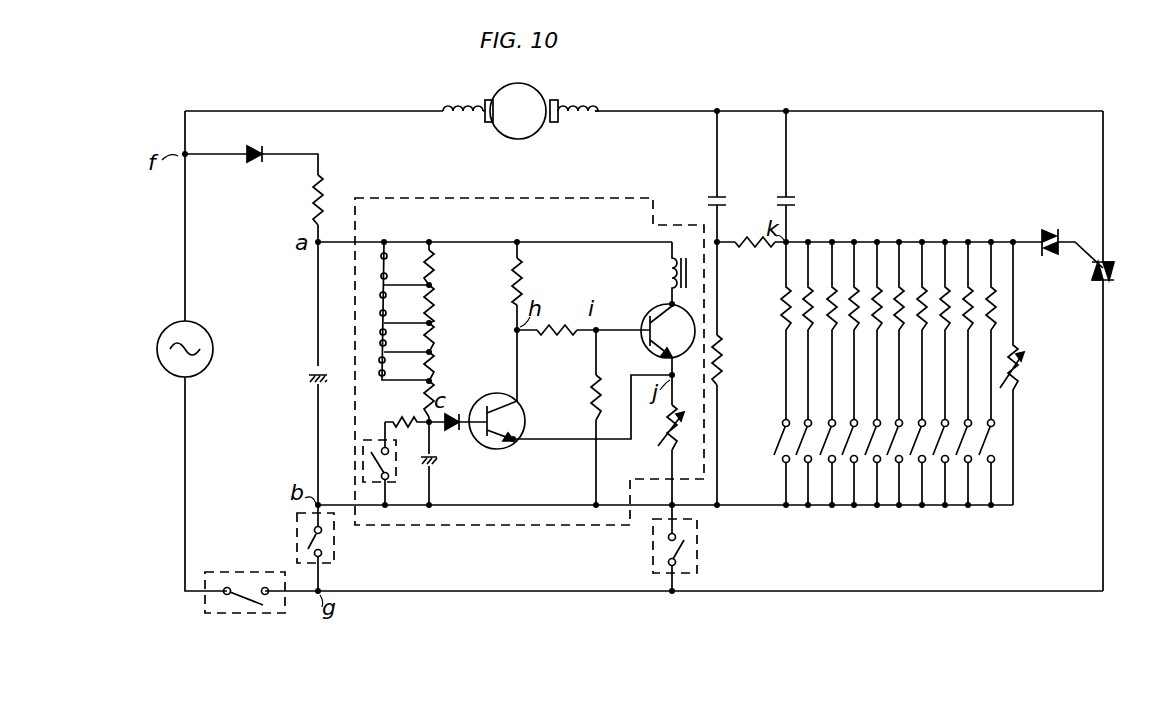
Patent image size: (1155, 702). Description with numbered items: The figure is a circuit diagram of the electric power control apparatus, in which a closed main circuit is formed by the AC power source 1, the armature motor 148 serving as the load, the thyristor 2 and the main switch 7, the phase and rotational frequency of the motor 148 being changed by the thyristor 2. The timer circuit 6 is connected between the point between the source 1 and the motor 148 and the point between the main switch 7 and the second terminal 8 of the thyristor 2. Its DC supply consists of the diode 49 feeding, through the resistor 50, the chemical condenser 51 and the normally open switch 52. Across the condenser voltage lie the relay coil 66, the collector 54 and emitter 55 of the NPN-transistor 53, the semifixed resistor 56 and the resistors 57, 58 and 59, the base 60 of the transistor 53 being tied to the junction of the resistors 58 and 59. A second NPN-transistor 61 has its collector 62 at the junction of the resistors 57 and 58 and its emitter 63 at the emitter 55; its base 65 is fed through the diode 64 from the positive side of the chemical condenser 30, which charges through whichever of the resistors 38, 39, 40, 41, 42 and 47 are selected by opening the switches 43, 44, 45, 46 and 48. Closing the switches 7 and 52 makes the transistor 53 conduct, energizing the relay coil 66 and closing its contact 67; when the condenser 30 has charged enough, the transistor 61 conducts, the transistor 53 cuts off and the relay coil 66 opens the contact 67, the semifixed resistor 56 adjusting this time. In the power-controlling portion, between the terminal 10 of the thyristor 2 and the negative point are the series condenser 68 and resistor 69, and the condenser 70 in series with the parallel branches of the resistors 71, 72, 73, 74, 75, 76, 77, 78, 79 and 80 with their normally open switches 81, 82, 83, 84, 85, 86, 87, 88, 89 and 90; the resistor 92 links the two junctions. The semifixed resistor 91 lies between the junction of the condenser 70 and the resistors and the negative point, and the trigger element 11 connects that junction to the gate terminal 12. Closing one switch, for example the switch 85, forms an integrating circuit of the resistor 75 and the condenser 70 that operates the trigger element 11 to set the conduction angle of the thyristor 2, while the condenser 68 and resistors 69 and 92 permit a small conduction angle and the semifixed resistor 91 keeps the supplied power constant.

The AC power source 1 is at (196, 325).
The thyristor 2 is at (1115, 270).
The timer circuit 6 is at (478, 527).
The main switch 7 is at (235, 614).
The second terminal 8 is at (1103, 320).
The terminal 10 is at (1103, 224).
The trigger element 11 is at (1040, 262).
The gate terminal 12 is at (1070, 238).
The chemical condenser 30 is at (433, 466).
The resistor 38 is at (424, 410).
The resistor 39 is at (435, 366).
The resistor 40 is at (435, 338).
The resistor 41 is at (435, 298).
The resistor 42 is at (435, 262).
The switch 43 is at (374, 368).
The switch 44 is at (376, 336).
The switch 45 is at (376, 304).
The switch 46 is at (378, 268).
The resistor 47 is at (414, 426).
The switch 48 is at (362, 472).
The diode 49 is at (256, 150).
The resistor 50 is at (323, 198).
The chemical condenser 51 is at (310, 371).
The normally open switch 52 is at (334, 528).
The NPN-transistor 53 is at (690, 314).
The collector 54 is at (660, 308).
The emitter 55 is at (672, 364).
The semifixed resistor 56 is at (660, 442).
The resistor 57 is at (523, 280).
The resistor 58 is at (544, 334).
The resistor 59 is at (594, 396).
The base 60 is at (642, 332).
The NPN-transistor 61 is at (486, 440).
The collector 62 is at (502, 396).
The emitter 63 is at (516, 442).
The diode 64 is at (452, 430).
The base 65 is at (458, 410).
The relay coil 66 is at (668, 274).
The contact 67 is at (697, 522).
The condenser 68 is at (706, 202).
The resistor 69 is at (722, 358).
The condenser 70 is at (790, 200).
The resistor 71 is at (784, 304).
The resistor 72 is at (808, 288).
The resistor 73 is at (830, 286).
The resistor 74 is at (852, 288).
The resistor 75 is at (874, 286).
The resistor 76 is at (896, 288).
The resistor 77 is at (918, 286).
The resistor 78 is at (942, 288).
The resistor 79 is at (964, 286).
The resistor 80 is at (988, 288).
The normally open switch 81 is at (772, 448).
The normally open switch 82 is at (804, 465).
The normally open switch 83 is at (824, 464).
The normally open switch 84 is at (848, 465).
The normally open switch 85 is at (870, 464).
The normally open switch 86 is at (894, 465).
The normally open switch 87 is at (916, 464).
The normally open switch 88 is at (940, 465).
The normally open switch 89 is at (962, 464).
The normally open switch 90 is at (986, 465).
The semifixed resistor 91 is at (1024, 354).
The resistor 92 is at (760, 248).
The armature motor 148 is at (538, 93).